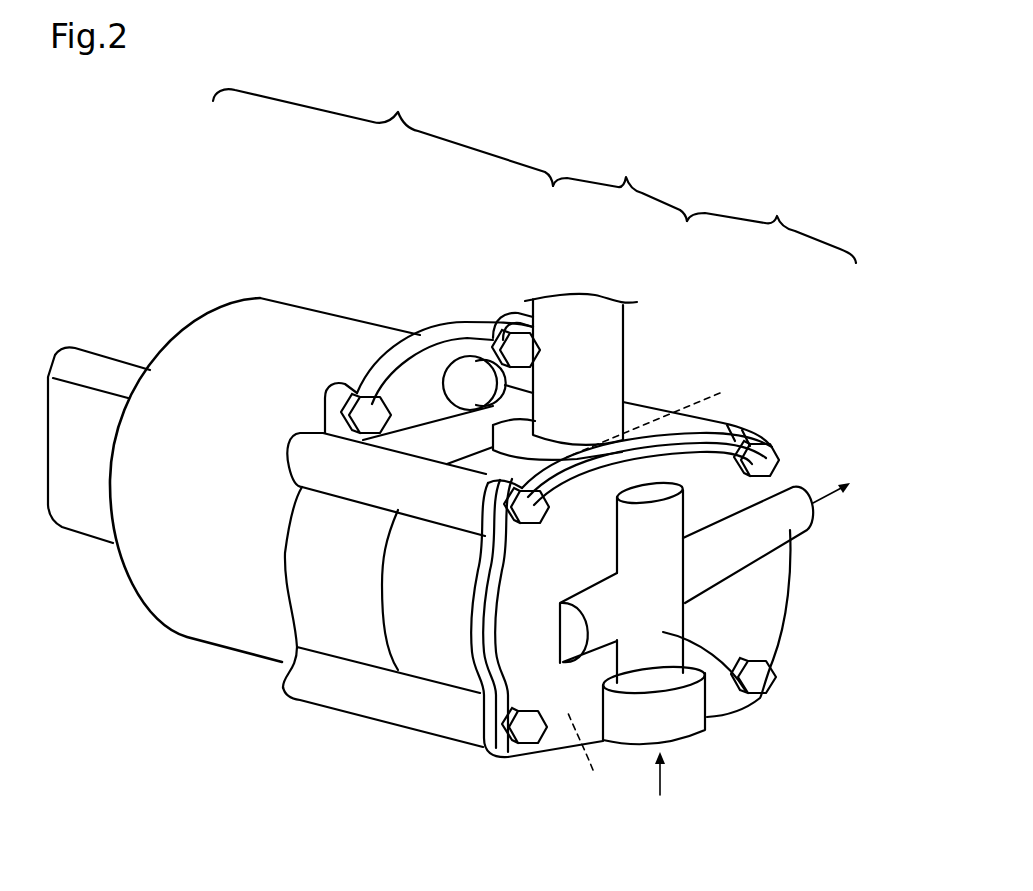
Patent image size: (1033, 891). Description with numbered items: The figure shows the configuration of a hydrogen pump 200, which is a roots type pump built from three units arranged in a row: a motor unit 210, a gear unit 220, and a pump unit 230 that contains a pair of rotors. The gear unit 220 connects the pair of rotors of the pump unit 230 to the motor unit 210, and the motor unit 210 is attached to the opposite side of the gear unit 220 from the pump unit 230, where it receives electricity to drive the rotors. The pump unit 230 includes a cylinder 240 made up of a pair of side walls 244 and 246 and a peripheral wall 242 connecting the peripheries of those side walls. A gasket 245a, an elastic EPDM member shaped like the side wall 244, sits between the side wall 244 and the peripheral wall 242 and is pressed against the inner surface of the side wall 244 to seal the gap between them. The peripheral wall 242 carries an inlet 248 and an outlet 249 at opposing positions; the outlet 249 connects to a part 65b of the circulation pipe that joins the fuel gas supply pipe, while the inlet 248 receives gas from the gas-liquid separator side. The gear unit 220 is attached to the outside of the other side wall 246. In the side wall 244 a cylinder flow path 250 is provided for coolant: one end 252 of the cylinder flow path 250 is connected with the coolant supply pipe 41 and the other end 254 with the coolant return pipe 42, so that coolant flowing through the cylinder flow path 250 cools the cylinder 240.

The hydrogen pump 200 is at (97, 198).
The motor unit 210 is at (383, 210).
The gear unit 220 is at (620, 185).
The pump unit 230 is at (759, 449).
The cylinder 240 is at (348, 783).
The peripheral wall 242 is at (427, 645).
The side wall 244 is at (547, 740).
The gasket 245a is at (480, 733).
The side wall 246 is at (375, 624).
The inlet 248 is at (595, 758).
The outlet 249 is at (668, 418).
The cylinder flow path 250 is at (763, 703).
The one end of the cylinder flow path 252 is at (690, 742).
The other end of the cylinder flow path 254 is at (812, 522).
The coolant supply pipe 41 is at (660, 789).
The coolant return pipe 42 is at (849, 485).
The part of the circulation pipe 65b is at (610, 322).